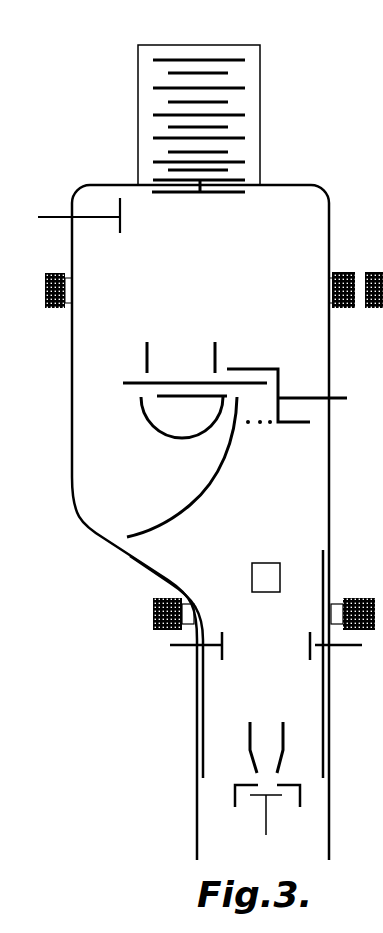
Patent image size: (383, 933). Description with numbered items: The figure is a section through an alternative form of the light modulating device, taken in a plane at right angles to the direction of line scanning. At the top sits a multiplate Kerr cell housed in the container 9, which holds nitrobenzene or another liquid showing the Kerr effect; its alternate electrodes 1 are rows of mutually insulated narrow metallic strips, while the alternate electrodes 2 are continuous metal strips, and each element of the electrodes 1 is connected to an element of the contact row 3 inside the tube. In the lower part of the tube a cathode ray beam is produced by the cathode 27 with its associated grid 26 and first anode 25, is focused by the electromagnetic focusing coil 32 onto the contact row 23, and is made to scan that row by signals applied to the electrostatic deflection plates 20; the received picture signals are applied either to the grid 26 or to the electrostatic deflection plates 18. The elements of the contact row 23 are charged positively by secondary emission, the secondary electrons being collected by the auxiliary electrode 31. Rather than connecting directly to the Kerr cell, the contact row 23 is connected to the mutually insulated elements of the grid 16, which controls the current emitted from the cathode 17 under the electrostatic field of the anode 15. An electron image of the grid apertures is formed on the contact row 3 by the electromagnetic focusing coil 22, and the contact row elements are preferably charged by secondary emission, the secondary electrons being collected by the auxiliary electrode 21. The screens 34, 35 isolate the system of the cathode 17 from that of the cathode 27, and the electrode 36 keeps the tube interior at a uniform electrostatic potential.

The electrodes 1 is at (230, 60).
The electrodes 2 is at (230, 73).
The contact row 3 is at (232, 194).
The container 9 is at (262, 163).
The anode 15 is at (143, 355).
The grid 16 is at (172, 380).
The cathode 17 is at (157, 398).
The electrostatic deflection plates 18 is at (308, 635).
The electrostatic deflection plates 20 is at (262, 567).
The auxiliary electrode 21 is at (123, 230).
The electromagnetic focusing coil 22 is at (47, 303).
The contact row 23 is at (262, 375).
The first anode 25 is at (285, 722).
The grid 26 is at (303, 803).
The cathode 27 is at (260, 797).
The auxiliary electrode 31 is at (278, 424).
The electromagnetic focusing coil 32 is at (153, 613).
The screen 34 is at (192, 498).
The screen 35 is at (163, 438).
The electrode 36 is at (150, 570).